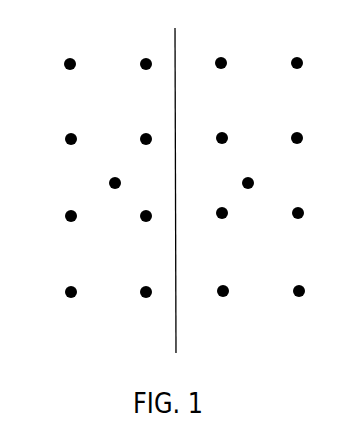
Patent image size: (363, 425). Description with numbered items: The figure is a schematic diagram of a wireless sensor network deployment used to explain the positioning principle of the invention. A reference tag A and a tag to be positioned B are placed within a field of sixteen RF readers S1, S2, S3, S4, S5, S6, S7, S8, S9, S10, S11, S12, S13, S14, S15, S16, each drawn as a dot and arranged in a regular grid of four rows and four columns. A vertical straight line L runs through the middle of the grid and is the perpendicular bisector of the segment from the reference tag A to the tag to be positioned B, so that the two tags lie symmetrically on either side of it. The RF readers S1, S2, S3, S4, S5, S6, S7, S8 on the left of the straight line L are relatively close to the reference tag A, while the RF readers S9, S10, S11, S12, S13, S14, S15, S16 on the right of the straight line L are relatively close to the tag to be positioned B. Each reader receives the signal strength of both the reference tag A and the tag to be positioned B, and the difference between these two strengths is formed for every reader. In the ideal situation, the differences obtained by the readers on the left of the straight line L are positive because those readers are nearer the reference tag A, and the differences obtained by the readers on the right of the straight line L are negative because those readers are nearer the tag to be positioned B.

The straight line L is at (186, 181).
The reference tag A is at (107, 185).
The tag to be positioned B is at (257, 185).
The RF reader S1 is at (54, 76).
The RF reader S2 is at (55, 151).
The RF reader S3 is at (57, 228).
The RF reader S4 is at (57, 307).
The RF reader S5 is at (132, 76).
The RF reader S6 is at (132, 151).
The RF reader S7 is at (132, 228).
The RF reader S8 is at (135, 307).
The RF reader S9 is at (210, 75).
The RF reader S10 is at (206, 150).
The RF reader S11 is at (205, 226).
The RF reader S12 is at (205, 307).
The RF reader S13 is at (278, 75).
The RF reader S14 is at (279, 150).
The RF reader S15 is at (280, 226).
The RF reader S16 is at (280, 307).